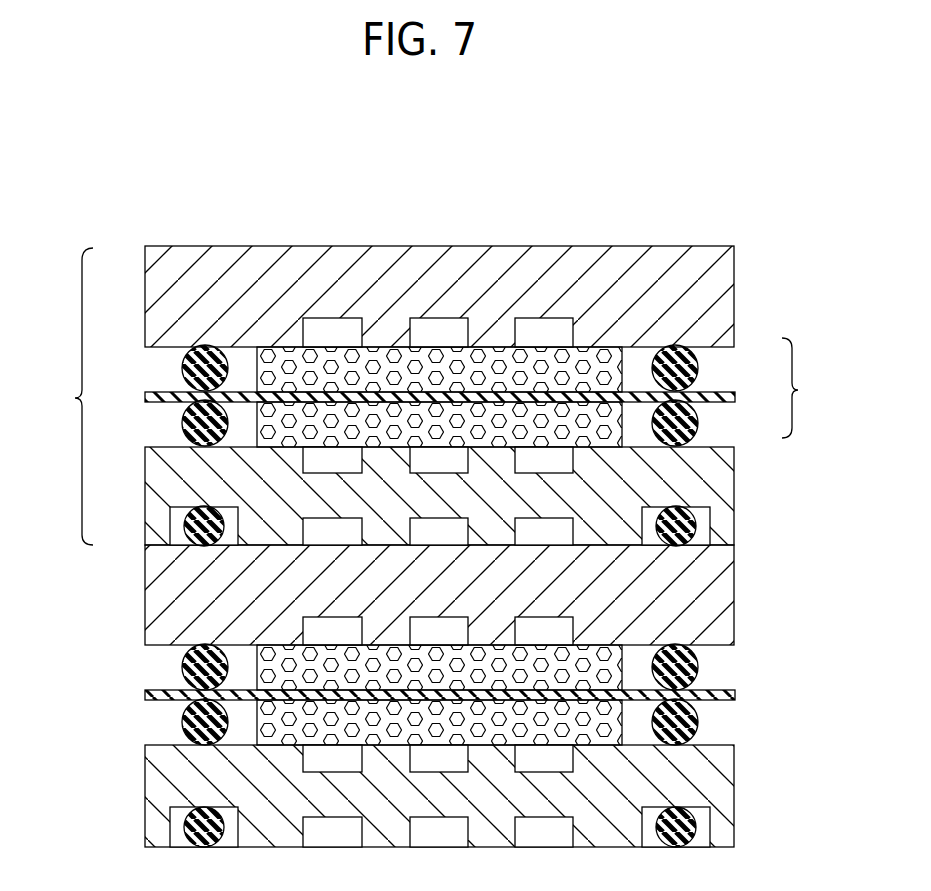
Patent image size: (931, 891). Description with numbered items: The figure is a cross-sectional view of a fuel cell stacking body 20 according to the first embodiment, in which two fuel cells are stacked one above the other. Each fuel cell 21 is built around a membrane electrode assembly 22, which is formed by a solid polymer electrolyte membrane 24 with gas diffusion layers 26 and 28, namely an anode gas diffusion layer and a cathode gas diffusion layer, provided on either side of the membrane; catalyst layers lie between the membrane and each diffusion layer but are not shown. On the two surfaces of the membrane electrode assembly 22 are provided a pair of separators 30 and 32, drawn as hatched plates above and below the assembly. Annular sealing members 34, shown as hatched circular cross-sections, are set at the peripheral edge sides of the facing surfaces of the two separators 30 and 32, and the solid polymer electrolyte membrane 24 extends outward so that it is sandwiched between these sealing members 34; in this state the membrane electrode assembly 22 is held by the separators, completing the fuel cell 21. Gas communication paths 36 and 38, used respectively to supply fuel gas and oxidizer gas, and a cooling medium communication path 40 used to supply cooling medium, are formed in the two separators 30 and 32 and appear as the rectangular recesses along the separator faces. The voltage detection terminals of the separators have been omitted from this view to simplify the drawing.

The fuel cell stacking body 20 is at (727, 144).
The fuel cell 21 is at (64, 396).
The membrane electrode assembly 22 is at (808, 388).
The solid polymer electrolyte membrane 24 is at (145, 397).
The anode gas diffusion layer 26 is at (377, 358).
The cathode gas diffusion layer 28 is at (577, 418).
The separator 30 is at (217, 263).
The separator 32 is at (163, 492).
The annular sealing member 34 is at (180, 377).
The gas communication path 36 is at (332, 318).
The gas communication path 38 is at (316, 462).
The cooling medium communication path 40 is at (430, 548).